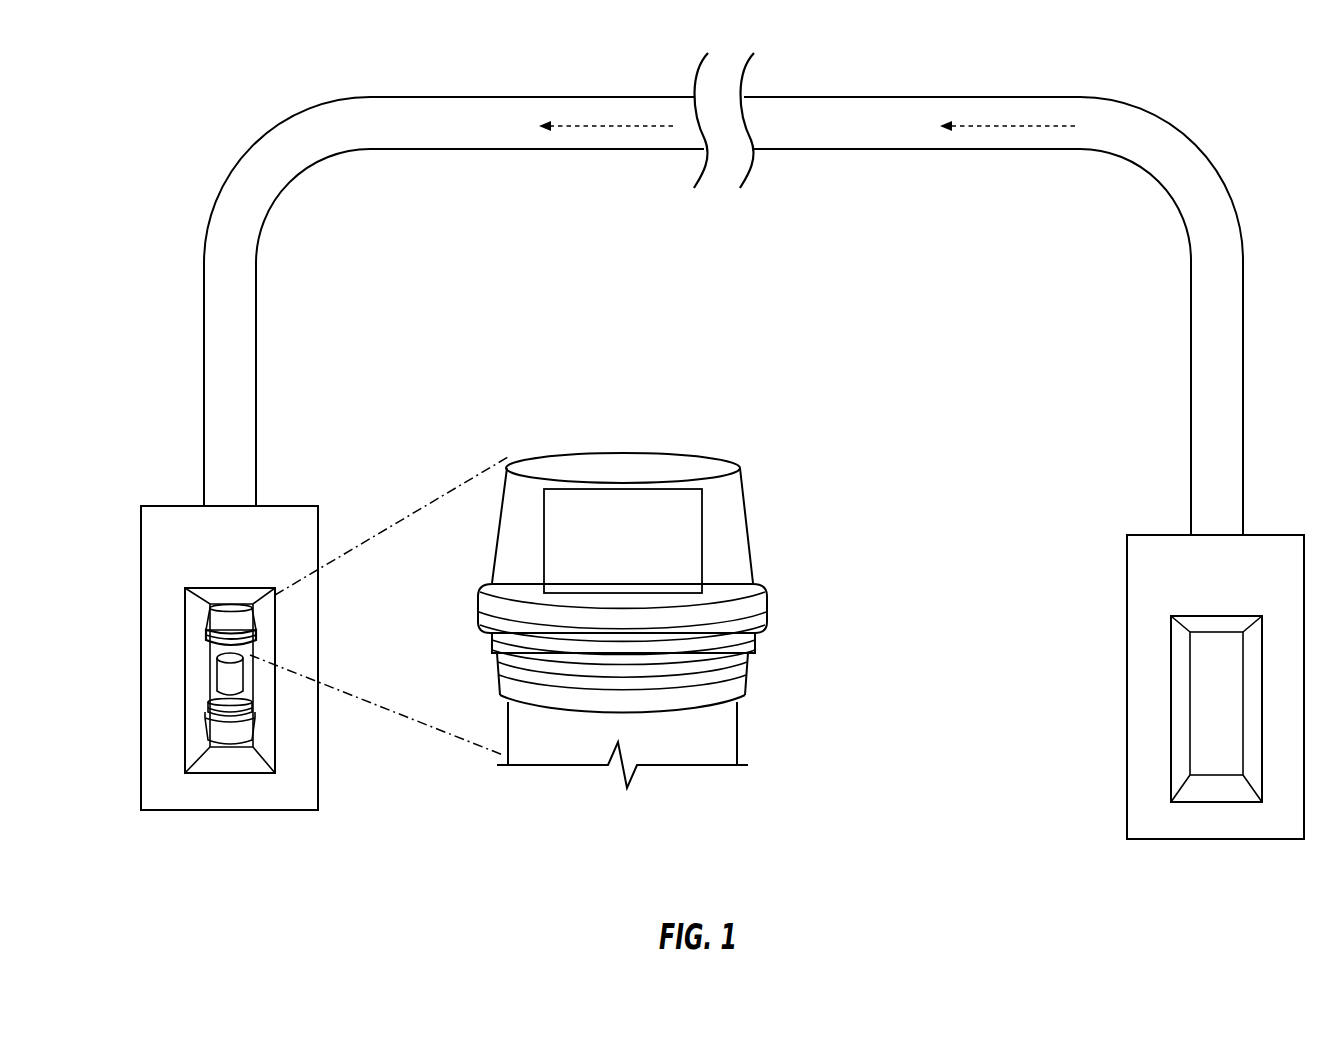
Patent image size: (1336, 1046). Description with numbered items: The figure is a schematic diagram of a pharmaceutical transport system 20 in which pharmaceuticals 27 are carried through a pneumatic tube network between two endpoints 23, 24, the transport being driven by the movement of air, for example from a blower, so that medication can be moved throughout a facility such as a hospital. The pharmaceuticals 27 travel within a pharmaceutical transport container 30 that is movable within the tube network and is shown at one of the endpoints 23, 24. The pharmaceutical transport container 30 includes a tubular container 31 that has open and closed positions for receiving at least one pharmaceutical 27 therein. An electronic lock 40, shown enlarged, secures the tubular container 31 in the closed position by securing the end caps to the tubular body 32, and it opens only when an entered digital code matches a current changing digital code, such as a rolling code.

The pharmaceutical transport system 20 is at (182, 124).
The endpoint 23 is at (185, 811).
The endpoint 24 is at (1158, 840).
The pharmaceutical 27 is at (232, 677).
The pharmaceutical transport container 30 is at (188, 626).
The tubular container 31 is at (778, 614).
The tubular body 32 is at (738, 731).
The electronic lock 40 is at (580, 498).